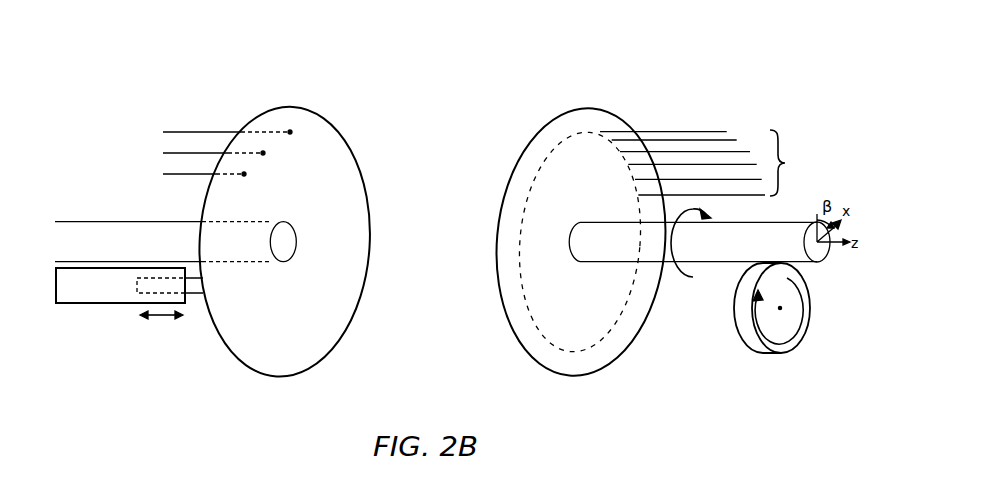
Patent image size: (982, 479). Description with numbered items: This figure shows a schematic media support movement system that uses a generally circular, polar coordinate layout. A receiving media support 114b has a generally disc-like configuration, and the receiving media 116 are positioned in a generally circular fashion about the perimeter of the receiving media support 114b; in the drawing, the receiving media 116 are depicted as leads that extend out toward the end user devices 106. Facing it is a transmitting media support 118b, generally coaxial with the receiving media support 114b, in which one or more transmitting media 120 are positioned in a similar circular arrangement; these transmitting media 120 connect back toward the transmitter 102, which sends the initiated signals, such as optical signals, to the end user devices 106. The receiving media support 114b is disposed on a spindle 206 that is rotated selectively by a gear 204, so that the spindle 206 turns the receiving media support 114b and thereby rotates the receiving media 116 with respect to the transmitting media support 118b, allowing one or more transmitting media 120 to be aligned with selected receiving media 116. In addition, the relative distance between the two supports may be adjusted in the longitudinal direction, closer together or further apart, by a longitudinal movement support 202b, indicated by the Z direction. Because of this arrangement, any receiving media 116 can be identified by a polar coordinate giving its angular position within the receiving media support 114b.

The transmitter 102 is at (183, 153).
The end user devices 106 is at (795, 163).
The receiving media support 114b is at (592, 113).
The receiving media 116 is at (728, 166).
The transmitting media support 118b is at (295, 113).
The transmitting media 120 is at (185, 175).
The longitudinal movement support 202b is at (129, 293).
The gear 204 is at (757, 347).
The spindle 206 is at (732, 258).